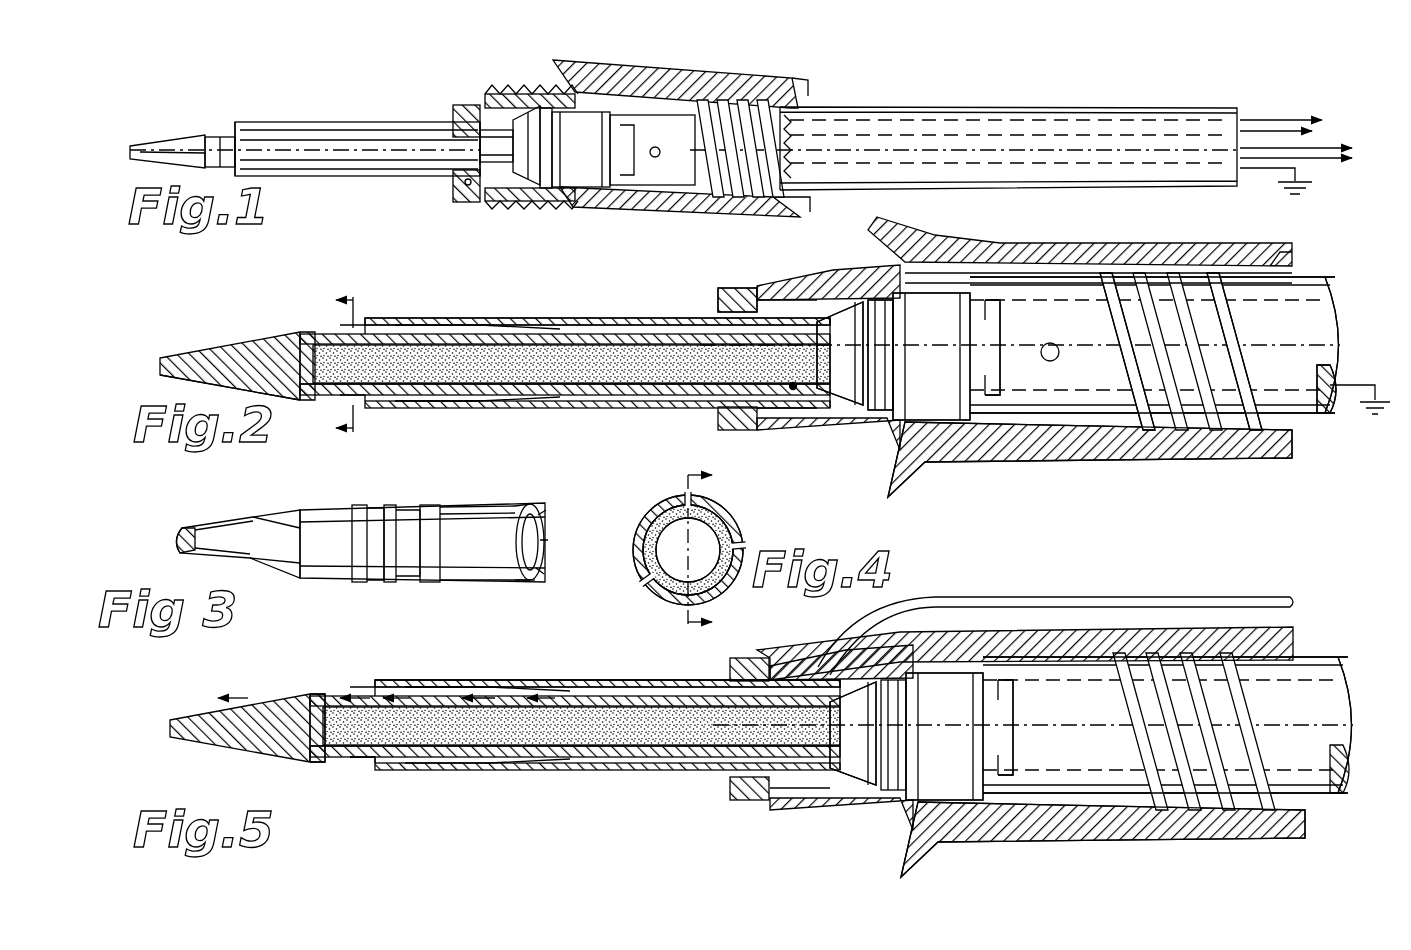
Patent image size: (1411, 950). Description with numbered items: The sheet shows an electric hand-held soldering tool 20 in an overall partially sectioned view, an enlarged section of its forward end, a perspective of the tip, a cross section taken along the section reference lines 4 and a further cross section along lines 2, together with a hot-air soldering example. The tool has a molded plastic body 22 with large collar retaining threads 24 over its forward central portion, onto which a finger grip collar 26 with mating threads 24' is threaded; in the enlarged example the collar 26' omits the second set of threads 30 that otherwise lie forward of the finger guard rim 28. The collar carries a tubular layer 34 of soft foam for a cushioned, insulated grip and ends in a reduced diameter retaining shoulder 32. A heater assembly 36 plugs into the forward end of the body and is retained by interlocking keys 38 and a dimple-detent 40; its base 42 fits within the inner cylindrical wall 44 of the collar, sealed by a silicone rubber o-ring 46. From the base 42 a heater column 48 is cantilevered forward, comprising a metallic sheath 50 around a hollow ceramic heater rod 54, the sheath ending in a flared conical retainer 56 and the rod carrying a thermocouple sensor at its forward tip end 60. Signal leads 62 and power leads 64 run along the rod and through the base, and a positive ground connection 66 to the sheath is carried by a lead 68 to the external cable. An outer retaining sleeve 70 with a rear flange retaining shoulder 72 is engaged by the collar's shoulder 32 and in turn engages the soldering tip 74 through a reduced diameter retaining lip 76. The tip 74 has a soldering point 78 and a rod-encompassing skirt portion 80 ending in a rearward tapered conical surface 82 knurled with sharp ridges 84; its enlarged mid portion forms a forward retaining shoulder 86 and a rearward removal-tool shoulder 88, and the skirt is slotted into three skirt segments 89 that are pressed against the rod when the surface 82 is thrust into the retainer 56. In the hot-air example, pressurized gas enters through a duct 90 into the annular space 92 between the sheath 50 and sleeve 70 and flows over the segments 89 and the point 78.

In FIG. 1, the soldering tool 20 is at (868, 94).
In FIG. 1, the body 22 is at (962, 107).
In FIG. 2, the body 22 is at (1300, 280).
In FIG. 5, the body 22 is at (1167, 725).
In FIG. 1, the collar retaining threads 24 is at (773, 117).
In FIG. 2, the collar retaining threads 24 is at (1197, 351).
In FIG. 1, the mating threads 24' is at (710, 59).
In FIG. 1, the finger grip collar 26 is at (782, 116).
In FIG. 2, the finger grip collar 26' is at (1278, 234).
In FIG. 1, the finger guard rim 28 is at (560, 62).
In FIG. 2, the finger guard rim 28 is at (895, 228).
In FIG. 1, the second set of threads 30 is at (500, 92).
In FIG. 1, the retaining shoulder 32 is at (470, 105).
In FIG. 2, the retaining shoulder 32 is at (735, 288).
In FIG. 1, the tubular layer of soft foam 34 is at (620, 82).
In FIG. 2, the tubular layer of soft foam 34 is at (1090, 353).
In FIG. 5, the tubular layer of soft foam 34 is at (1005, 845).
In FIG. 1, the heater assembly 36 is at (623, 149).
In FIG. 2, the heater assembly 36 is at (931, 356).
In FIG. 5, the heater assembly 36 is at (944, 736).
In FIG. 1, the interlocking keys 38 is at (640, 180).
In FIG. 2, the interlocking keys 38 is at (1000, 322).
In FIG. 5, the interlocking keys 38 is at (1013, 772).
In FIG. 1, the dimple-detent 40 is at (659, 155).
In FIG. 2, the dimple-detent 40 is at (1060, 357).
In FIG. 1, the base 42 is at (520, 190).
In FIG. 2, the base 42 is at (842, 353).
In FIG. 5, the base 42 is at (854, 733).
In FIG. 1, the inner cylindrical wall 44 is at (486, 195).
In FIG. 2, the inner cylindrical wall 44 is at (760, 335).
In FIG. 1, the silicone rubber o-ring 46 is at (550, 190).
In FIG. 2, the silicone rubber o-ring 46 is at (906, 355).
In FIG. 1, the heater column 48 is at (495, 148).
In FIG. 2, the heater column 48 is at (655, 395).
In FIG. 5, the heater column 48 is at (660, 758).
In FIG. 1, the metallic sheath 50 is at (484, 94).
In FIG. 2, the metallic sheath 50 is at (700, 405).
In FIG. 5, the metallic sheath 50 is at (705, 768).
In FIG. 5, the hollow ceramic heater rod 54 is at (578, 773).
In FIG. 5, the conical retainer 56 is at (603, 686).
In FIG. 2, the forward tip end 60 is at (305, 345).
In FIG. 5, the forward tip end 60 is at (308, 740).
In FIG. 1, the electrical signal leads 62 is at (1262, 118).
In FIG. 1, the power electrical leads 64 is at (1320, 136).
In FIG. 1, the positive ground connection 66 is at (470, 190).
In FIG. 2, the positive ground connection 66 is at (798, 392).
In FIG. 1, the lead 68 is at (1256, 172).
In FIG. 2, the lead 68 is at (1330, 385).
In FIG. 1, the outer retaining sleeve 70 is at (292, 122).
In FIG. 5, the outer retaining sleeve 70 is at (478, 681).
In FIG. 1, the flange retaining shoulder 72 is at (455, 122).
In FIG. 2, the flange retaining shoulder 72 is at (770, 296).
In FIG. 5, the flange retaining shoulder 72 is at (790, 652).
In FIG. 1, the soldering tip 74 is at (220, 135).
In FIG. 2, the soldering tip 74 is at (293, 404).
In FIG. 3, the soldering tip 74 is at (368, 583).
In FIG. 5, the soldering tip 74 is at (315, 690).
In FIG. 1, the retaining lip 76 is at (250, 108).
In FIG. 2, the retaining lip 76 is at (372, 410).
In FIG. 5, the retaining lip 76 is at (378, 681).
In FIG. 1, the soldering point 78 is at (175, 138).
In FIG. 2, the soldering point 78 is at (205, 356).
In FIG. 3, the soldering point 78 is at (258, 521).
In FIG. 5, the soldering point 78 is at (260, 700).
In FIG. 2, the skirt portion 80 is at (515, 400).
In FIG. 3, the skirt portion 80 is at (430, 583).
In FIG. 5, the skirt portion 80 is at (455, 766).
In FIG. 2, the tapered conical surface 82 is at (578, 400).
In FIG. 3, the tapered conical surface 82 is at (540, 583).
In FIG. 5, the tapered conical surface 82 is at (590, 682).
In FIG. 3, the sharp ridges 84 is at (530, 505).
In FIG. 3, the forward retaining shoulder 86 is at (358, 506).
In FIG. 5, the forward retaining shoulder 86 is at (372, 770).
In FIG. 2, the tip removal tool engaging shoulder 88 is at (440, 405).
In FIG. 3, the tip removal tool engaging shoulder 88 is at (405, 505).
In FIG. 5, the tip removal tool engaging shoulder 88 is at (430, 686).
In FIG. 2, the skirt segments 89 is at (548, 405).
In FIG. 3, the skirt segments 89 is at (545, 535).
In FIG. 4, the skirt segments 89 is at (672, 500).
In FIG. 5, the skirt segments 89 is at (505, 770).
In FIG. 5, the duct 90 is at (1145, 597).
In FIG. 5, the annular space 92 is at (768, 800).
In FIG. 4, the section line 2- 2 is at (712, 550).
In FIG. 2, the section line 4- 4 is at (329, 367).